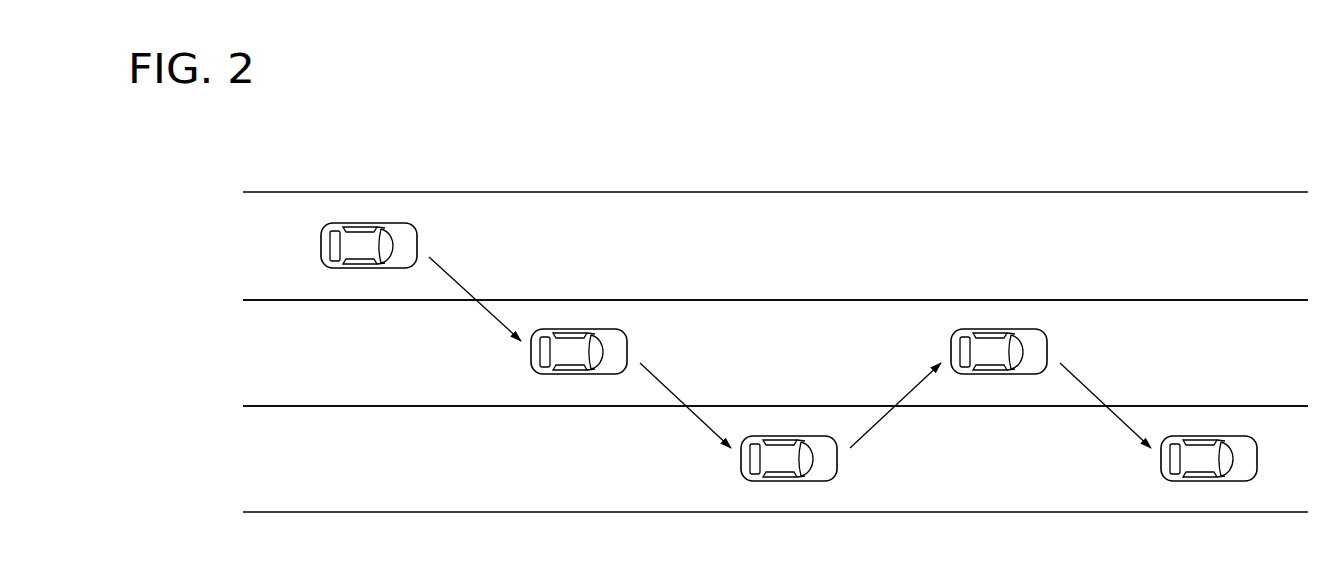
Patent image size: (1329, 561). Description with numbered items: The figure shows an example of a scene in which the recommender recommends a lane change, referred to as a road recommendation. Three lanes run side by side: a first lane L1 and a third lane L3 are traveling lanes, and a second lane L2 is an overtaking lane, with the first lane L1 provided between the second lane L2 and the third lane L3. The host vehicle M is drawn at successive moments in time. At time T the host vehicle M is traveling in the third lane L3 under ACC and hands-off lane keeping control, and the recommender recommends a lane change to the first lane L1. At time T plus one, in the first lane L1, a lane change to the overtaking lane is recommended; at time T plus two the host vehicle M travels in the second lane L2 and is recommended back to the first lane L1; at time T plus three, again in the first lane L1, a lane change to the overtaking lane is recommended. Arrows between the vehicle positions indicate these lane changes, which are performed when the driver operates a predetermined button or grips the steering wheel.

The host vehicle M is at (1208, 435).
The first lane L1 is at (273, 370).
The second lane L2 is at (273, 474).
The third lane L3 is at (273, 261).